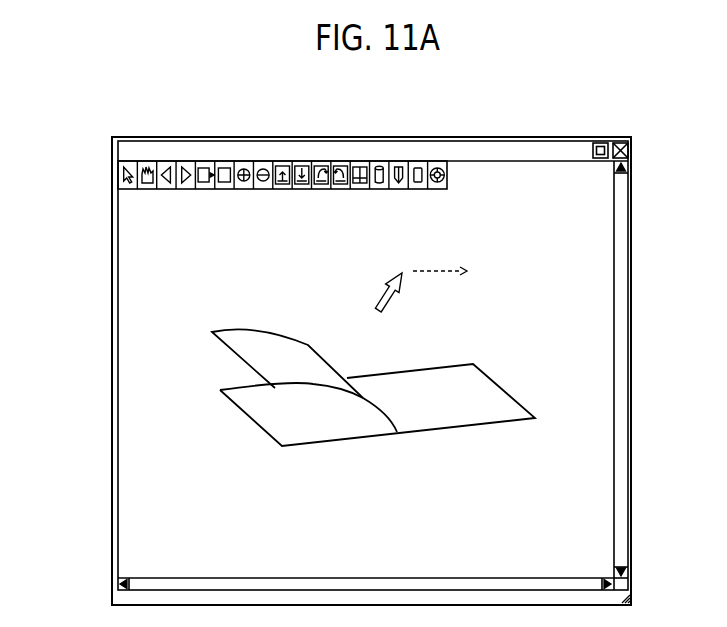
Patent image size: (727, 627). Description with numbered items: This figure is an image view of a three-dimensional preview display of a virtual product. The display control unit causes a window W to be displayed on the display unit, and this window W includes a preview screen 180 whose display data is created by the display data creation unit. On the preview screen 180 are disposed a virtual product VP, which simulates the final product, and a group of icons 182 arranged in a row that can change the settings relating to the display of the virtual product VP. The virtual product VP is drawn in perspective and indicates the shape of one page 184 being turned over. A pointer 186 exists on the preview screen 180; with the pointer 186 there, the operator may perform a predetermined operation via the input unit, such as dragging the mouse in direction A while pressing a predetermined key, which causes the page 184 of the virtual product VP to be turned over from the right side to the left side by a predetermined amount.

The window W is at (427, 137).
The preview screen 180 is at (128, 228).
The group of icons 182 is at (124, 173).
The page 184 is at (257, 342).
The pointer 186 is at (388, 301).
The virtual product VP is at (447, 436).
The direction A is at (440, 259).